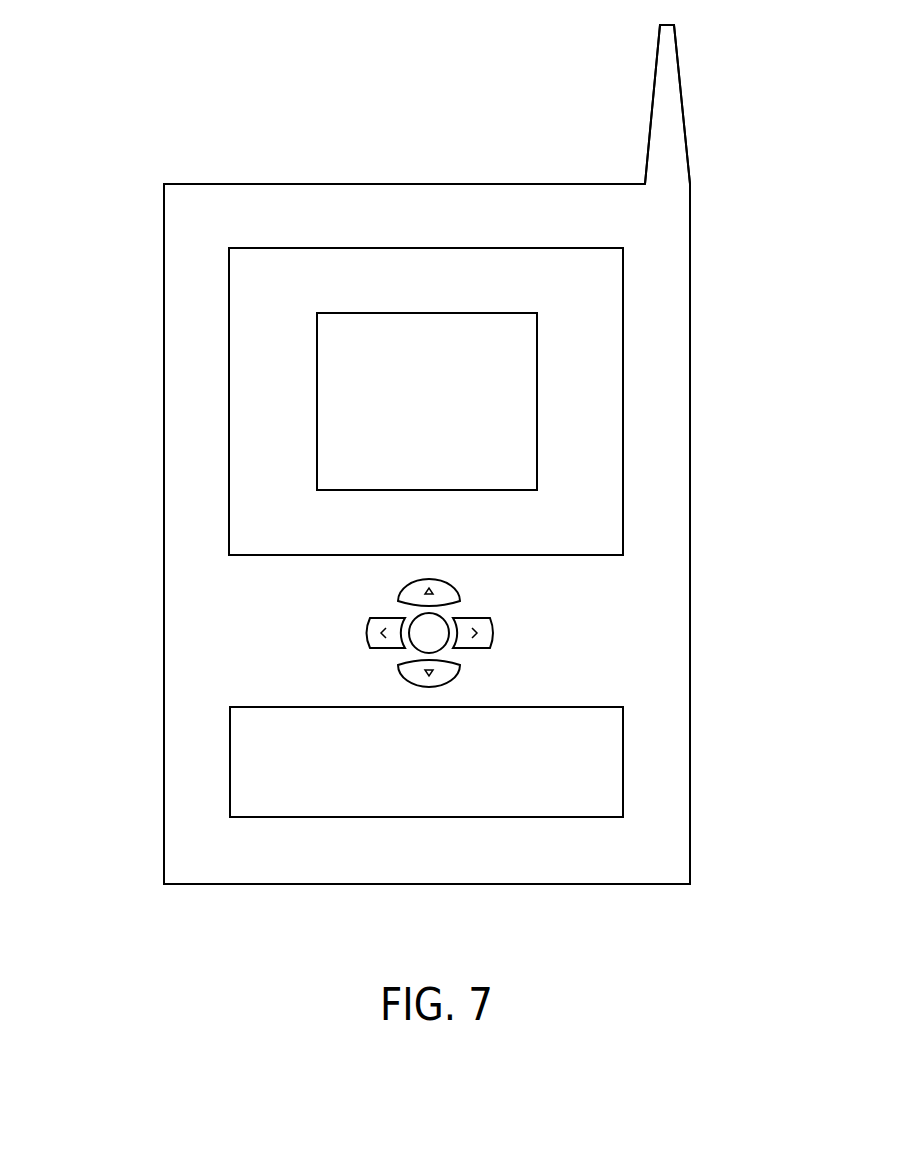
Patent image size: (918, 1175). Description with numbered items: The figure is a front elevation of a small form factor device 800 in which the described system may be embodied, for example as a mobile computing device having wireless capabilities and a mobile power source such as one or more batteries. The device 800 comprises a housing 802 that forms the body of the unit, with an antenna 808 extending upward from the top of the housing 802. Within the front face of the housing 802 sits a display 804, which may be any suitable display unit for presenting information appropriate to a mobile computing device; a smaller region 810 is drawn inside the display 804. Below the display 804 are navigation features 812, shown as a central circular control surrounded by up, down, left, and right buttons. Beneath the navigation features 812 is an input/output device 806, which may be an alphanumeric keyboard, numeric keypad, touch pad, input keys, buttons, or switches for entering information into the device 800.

The small form factor device 800 is at (163, 121).
The housing 802 is at (164, 622).
The display 804 is at (623, 305).
The input/output (I/O) device 806 is at (623, 762).
The antenna 808 is at (652, 103).
The display window / image area 810 is at (427, 313).
The navigation features 812 is at (530, 634).